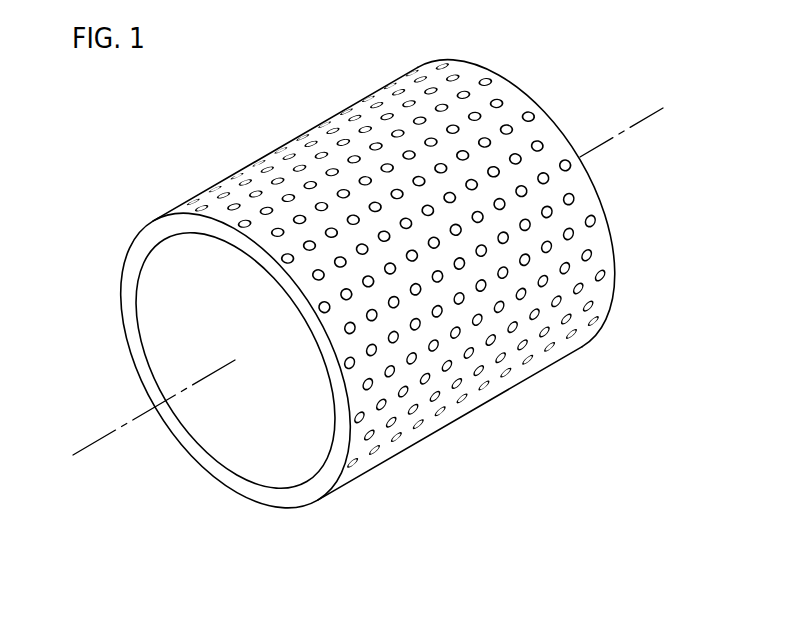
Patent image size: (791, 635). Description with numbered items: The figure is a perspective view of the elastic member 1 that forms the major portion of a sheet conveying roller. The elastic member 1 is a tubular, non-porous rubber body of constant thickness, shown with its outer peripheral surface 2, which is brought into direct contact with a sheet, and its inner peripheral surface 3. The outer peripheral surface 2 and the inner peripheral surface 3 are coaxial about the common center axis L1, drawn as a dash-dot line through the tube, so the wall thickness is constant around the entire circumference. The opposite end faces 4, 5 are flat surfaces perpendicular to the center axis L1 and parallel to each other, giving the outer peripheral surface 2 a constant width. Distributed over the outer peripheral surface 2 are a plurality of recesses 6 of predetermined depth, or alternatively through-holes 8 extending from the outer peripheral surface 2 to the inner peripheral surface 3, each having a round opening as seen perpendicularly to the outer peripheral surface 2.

The elastic member 1 is at (300, 60).
The outer peripheral surface 2 is at (608, 253).
The inner peripheral surface 3 is at (267, 463).
The end face 4 is at (128, 288).
The end face 5 is at (523, 91).
The recesses 6 is at (394, 266).
The through-holes 8 is at (522, 352).
The center axis L1 is at (105, 437).